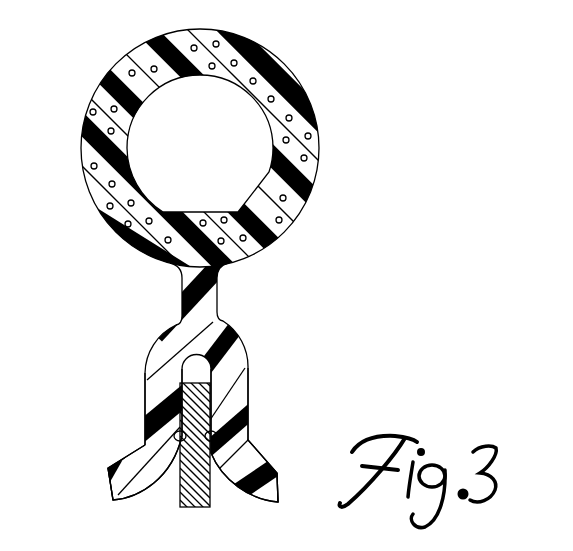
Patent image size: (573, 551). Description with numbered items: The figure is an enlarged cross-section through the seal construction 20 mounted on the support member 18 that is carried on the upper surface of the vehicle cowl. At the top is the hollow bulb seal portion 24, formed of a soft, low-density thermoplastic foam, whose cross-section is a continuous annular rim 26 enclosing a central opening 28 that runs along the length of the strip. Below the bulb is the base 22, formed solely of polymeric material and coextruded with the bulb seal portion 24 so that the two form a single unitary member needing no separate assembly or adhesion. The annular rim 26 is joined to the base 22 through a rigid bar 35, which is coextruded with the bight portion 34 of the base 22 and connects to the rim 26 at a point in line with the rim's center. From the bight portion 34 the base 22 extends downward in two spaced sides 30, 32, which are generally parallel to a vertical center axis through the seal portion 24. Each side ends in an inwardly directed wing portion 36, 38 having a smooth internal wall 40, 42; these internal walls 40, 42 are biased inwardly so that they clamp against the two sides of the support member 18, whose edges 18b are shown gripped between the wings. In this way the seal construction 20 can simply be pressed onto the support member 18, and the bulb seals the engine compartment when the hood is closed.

The support member 18 is at (212, 388).
The flange edges 18b is at (178, 462).
The seal construction 20 is at (215, 186).
The base 22 is at (195, 384).
The hollow bulb seal portion 24 is at (314, 90).
The annular rim 26 is at (113, 118).
The central opening 28 is at (216, 158).
The side of base 30 is at (158, 373).
The side of base 32 is at (233, 398).
The bight portion 34 is at (180, 345).
The rigid bar 35 is at (182, 297).
The wing portion 36 is at (168, 442).
The wing portion 38 is at (247, 447).
The internal wall 40 is at (176, 423).
The internal wall 42 is at (215, 434).